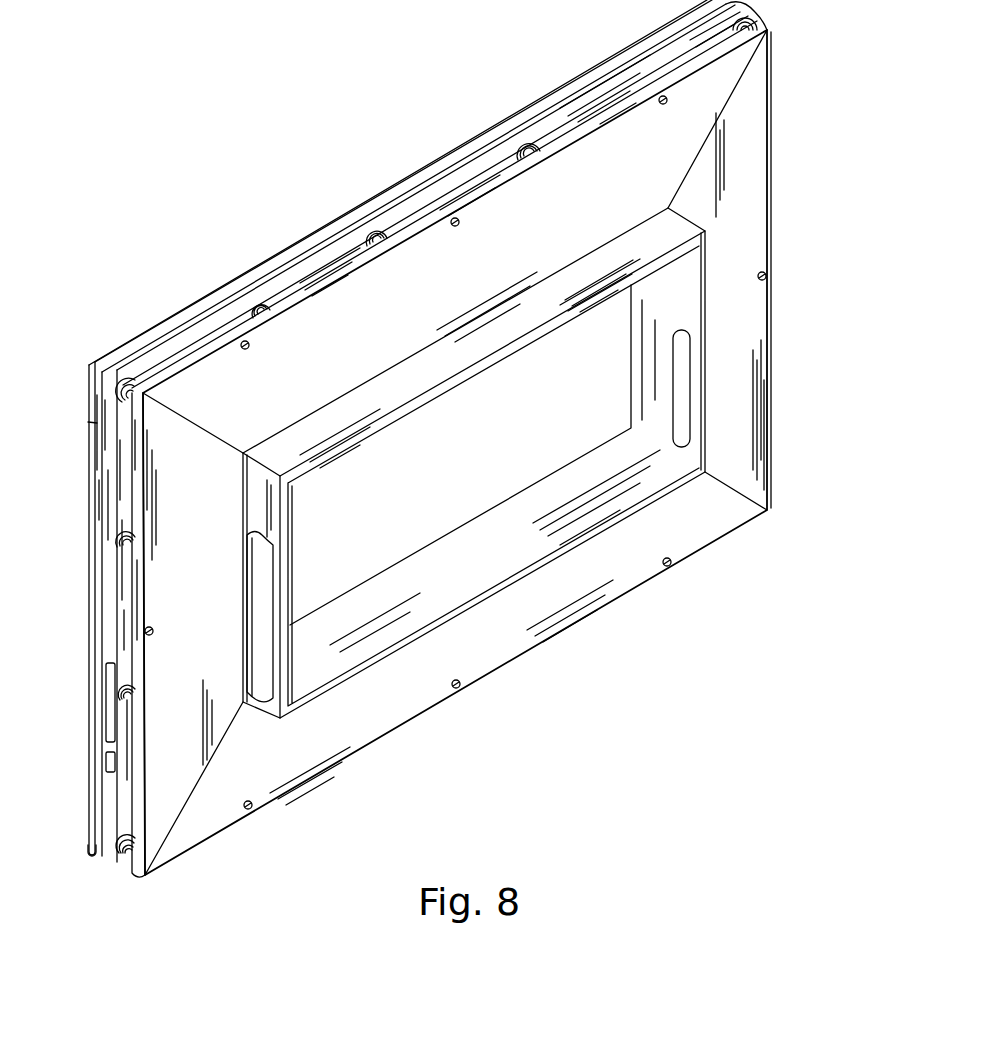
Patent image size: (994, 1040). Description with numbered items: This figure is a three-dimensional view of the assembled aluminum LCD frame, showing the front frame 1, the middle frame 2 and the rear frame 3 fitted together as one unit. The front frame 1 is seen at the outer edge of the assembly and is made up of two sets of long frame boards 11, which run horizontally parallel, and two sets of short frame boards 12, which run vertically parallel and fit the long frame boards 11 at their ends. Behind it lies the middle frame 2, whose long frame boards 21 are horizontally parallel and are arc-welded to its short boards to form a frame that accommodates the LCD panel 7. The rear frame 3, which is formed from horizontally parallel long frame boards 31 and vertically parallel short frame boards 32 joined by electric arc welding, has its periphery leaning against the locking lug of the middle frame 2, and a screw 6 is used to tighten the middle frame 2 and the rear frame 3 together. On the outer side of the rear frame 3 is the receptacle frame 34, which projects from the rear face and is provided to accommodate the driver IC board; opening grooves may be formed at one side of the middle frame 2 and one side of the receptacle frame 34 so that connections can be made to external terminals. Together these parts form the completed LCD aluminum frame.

The front frame 1 is at (262, 254).
The middle frame 2 is at (362, 227).
The long frame boards 21 is at (458, 175).
The rear frame 3 is at (760, 165).
The long frame boards 31 is at (737, 68).
The short frame boards 32 is at (760, 347).
The receptacle frame 34 is at (578, 512).
The screw 6 is at (459, 226).
The LCD panel 7 is at (268, 635).
The long frame boards 11 is at (97, 853).
The short frame boards 12 is at (92, 763).